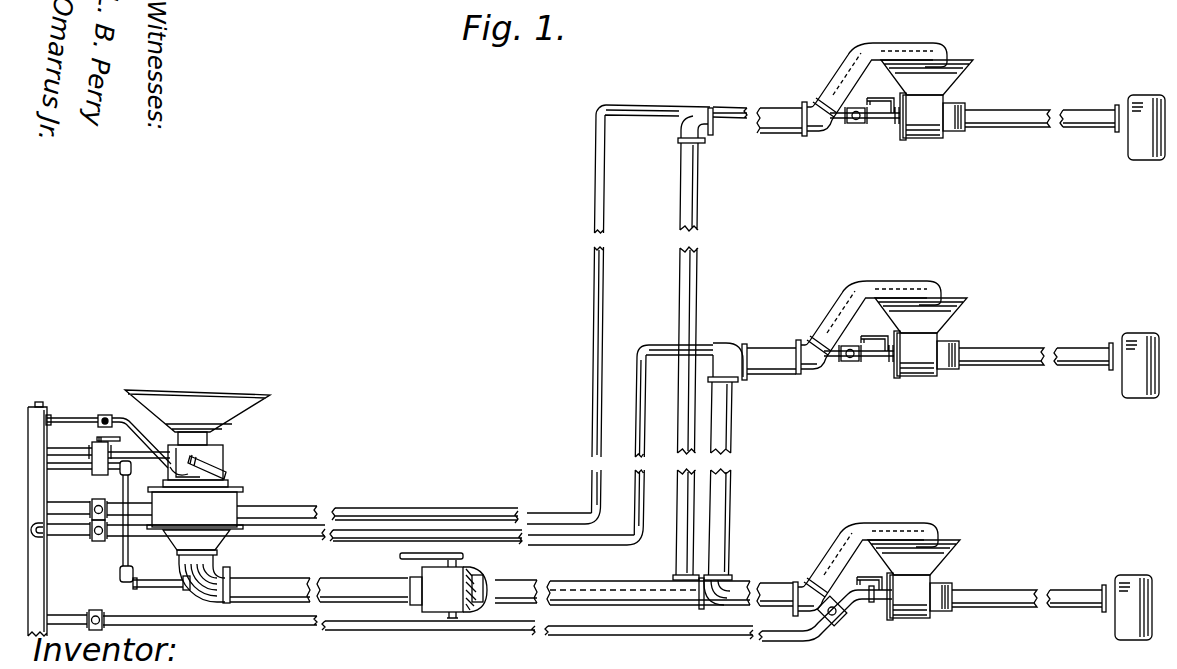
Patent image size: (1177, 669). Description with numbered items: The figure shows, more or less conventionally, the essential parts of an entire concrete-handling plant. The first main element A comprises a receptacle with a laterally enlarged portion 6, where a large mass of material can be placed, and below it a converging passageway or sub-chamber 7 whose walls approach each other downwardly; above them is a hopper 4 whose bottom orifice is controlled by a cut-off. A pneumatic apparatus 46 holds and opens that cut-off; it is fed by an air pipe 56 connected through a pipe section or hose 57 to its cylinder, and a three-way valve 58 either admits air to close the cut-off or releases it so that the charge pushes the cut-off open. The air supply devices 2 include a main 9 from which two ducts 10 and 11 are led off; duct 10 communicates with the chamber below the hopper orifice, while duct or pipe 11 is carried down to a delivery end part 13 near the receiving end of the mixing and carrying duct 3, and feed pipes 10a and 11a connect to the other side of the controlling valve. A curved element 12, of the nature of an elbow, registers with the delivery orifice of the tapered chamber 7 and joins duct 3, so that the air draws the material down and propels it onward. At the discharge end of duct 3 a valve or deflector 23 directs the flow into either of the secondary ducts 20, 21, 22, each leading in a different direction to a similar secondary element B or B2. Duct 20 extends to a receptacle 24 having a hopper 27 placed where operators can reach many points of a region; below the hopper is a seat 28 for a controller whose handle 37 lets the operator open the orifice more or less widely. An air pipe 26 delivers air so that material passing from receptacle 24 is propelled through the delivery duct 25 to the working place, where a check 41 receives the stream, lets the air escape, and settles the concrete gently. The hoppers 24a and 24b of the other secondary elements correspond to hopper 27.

The air supply devices 2 is at (28, 519).
The mixing and carrying duct 3 is at (285, 576).
The hopper 4 is at (231, 392).
The laterally enlarged portion 6 is at (228, 506).
The converging passageway or sub-chamber 7 is at (218, 543).
The main 9 is at (46, 411).
The duct 10 is at (138, 459).
The air feed pipe 10a is at (75, 445).
The duct or pipe 11 is at (123, 492).
The air feed pipe 11a is at (68, 470).
The curved element 12 is at (180, 570).
The delivery end part 13 is at (155, 587).
The secondary duct 20 is at (777, 588).
The secondary duct 21 is at (698, 283).
The secondary duct 22 is at (733, 478).
The valve or deflector 23 is at (425, 575).
The receptacle 24 is at (948, 588).
The hopper 24a is at (947, 58).
The hopper 24b is at (945, 320).
The delivery duct 25 is at (1028, 352).
The air pipe 26 is at (630, 637).
The hopper 27 is at (955, 542).
The seat 28 is at (913, 614).
The handle 37 is at (870, 578).
The check 41 is at (1133, 138).
The pneumatic apparatus 46 is at (227, 470).
The air pipe 56 is at (79, 419).
The pipe section or hose 57 is at (138, 435).
The three-way valve 58 is at (104, 416).
The first main element A is at (223, 455).
The secondary element B is at (906, 461).
The secondary element B2 is at (914, 86).